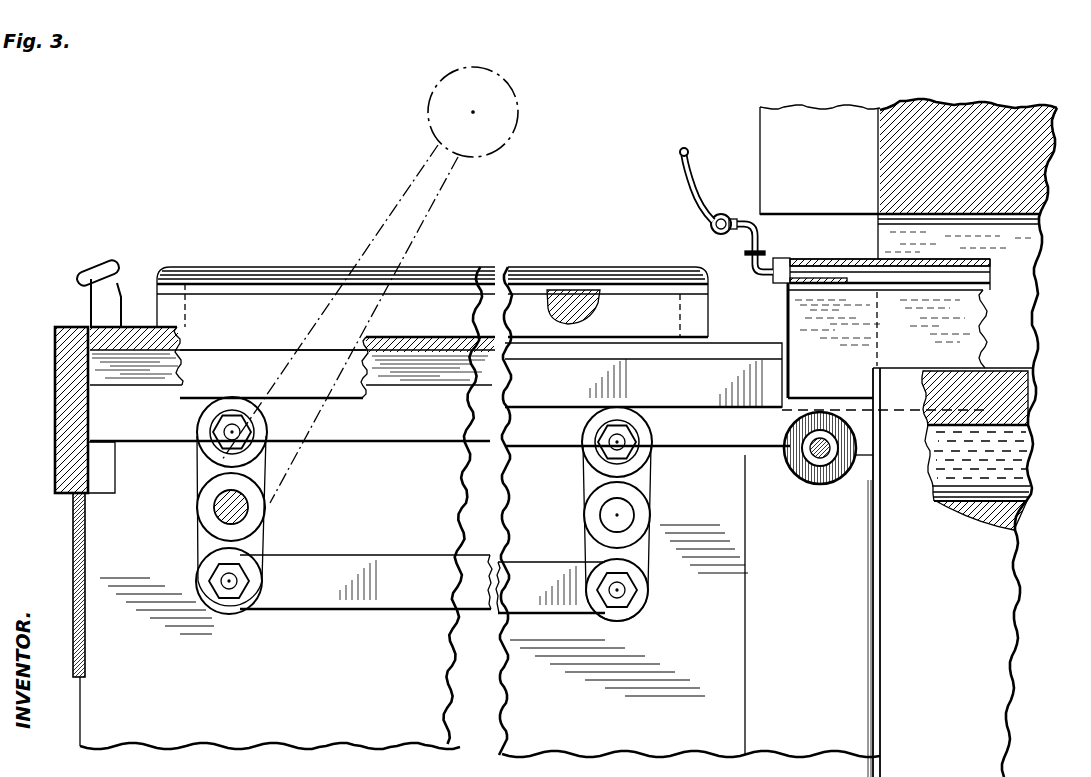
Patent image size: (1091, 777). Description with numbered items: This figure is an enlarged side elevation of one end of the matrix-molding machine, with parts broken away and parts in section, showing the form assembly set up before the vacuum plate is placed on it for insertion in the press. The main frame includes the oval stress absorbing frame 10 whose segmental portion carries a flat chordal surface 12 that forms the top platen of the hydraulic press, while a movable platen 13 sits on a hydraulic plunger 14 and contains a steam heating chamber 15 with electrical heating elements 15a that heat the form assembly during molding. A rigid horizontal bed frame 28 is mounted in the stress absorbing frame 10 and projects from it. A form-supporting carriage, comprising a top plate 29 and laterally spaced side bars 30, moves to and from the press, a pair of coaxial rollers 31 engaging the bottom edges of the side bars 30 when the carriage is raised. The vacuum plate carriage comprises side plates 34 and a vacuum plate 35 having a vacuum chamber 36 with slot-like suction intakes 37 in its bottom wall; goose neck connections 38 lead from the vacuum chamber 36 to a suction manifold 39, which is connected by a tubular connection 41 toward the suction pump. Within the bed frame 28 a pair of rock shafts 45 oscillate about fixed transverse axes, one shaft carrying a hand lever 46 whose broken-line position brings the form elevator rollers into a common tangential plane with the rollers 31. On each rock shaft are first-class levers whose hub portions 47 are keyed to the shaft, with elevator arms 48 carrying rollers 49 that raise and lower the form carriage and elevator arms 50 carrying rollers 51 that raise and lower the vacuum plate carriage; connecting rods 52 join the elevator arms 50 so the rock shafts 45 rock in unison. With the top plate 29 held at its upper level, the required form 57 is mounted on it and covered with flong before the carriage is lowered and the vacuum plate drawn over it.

The stress absorbing frame 10 is at (900, 182).
The flat chordal surface 12 is at (1022, 224).
The movable platen 13 is at (1019, 371).
The hydraulic plunger 14 is at (1008, 581).
The steam heating chamber 15 is at (1029, 464).
The electrical heating elements 15a is at (1022, 491).
The bed frame 28 is at (55, 415).
The top plate 29 is at (746, 354).
The side bars 30 is at (197, 386).
The rollers 31 is at (800, 478).
The side plates 34 is at (792, 329).
The vacuum plate 35 is at (806, 261).
The vacuum chamber 36 is at (832, 271).
The suction intakes 37 is at (907, 283).
The goose neck connections 38 is at (760, 240).
The suction manifold 39 is at (716, 233).
The tubular connection 41 is at (692, 162).
The rock shafts 45 is at (212, 511).
The hand lever 46 is at (406, 195).
The hub portions 47 is at (260, 508).
The elevator arms 48 is at (204, 469).
The rollers 49 is at (200, 436).
The elevator arms 50 is at (256, 541).
The rollers 51 is at (230, 608).
The connecting rods 52 is at (356, 560).
The form 57 is at (588, 315).